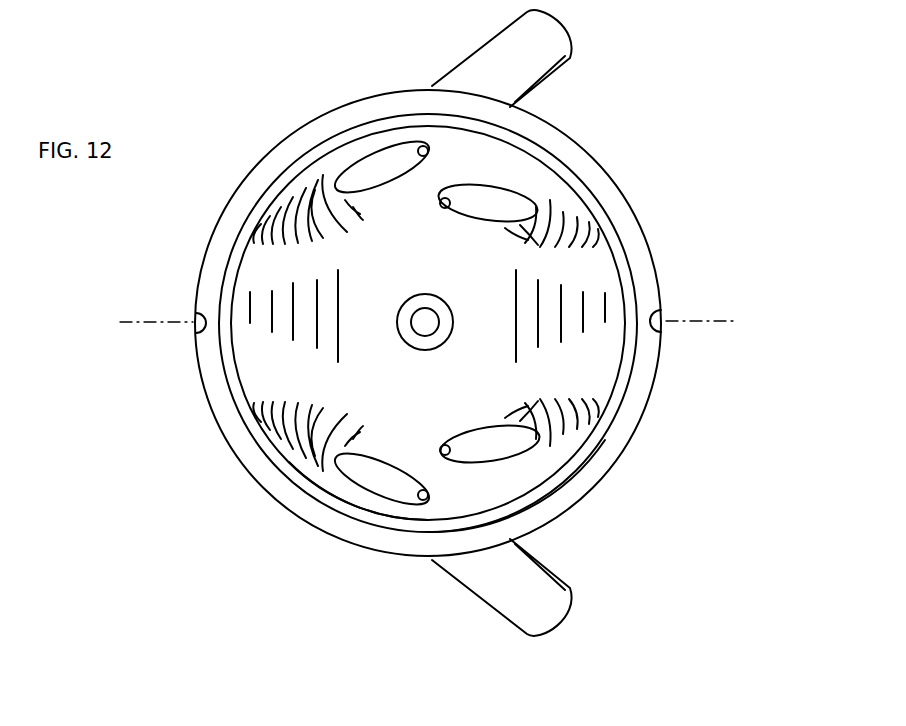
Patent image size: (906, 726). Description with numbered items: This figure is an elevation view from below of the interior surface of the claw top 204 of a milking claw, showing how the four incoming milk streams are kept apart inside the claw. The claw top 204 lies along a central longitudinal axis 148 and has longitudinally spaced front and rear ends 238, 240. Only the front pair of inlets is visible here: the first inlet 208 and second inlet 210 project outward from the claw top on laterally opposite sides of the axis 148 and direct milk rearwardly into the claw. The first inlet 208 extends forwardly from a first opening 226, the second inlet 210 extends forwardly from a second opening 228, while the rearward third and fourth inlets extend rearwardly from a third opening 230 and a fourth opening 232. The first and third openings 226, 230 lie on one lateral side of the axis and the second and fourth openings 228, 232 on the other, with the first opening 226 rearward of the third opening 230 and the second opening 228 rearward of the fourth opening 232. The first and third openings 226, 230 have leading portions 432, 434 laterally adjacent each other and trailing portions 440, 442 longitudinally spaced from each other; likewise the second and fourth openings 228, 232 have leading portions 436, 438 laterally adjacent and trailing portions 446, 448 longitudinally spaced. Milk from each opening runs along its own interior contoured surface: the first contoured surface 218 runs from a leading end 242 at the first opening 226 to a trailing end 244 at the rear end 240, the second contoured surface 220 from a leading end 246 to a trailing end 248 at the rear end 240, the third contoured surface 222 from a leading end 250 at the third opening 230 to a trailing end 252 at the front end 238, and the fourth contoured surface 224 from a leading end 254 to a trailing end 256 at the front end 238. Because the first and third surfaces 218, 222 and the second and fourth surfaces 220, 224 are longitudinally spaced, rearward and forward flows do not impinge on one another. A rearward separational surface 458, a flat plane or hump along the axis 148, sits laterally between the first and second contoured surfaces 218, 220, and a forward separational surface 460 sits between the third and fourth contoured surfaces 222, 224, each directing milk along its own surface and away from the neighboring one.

The central longitudinal axis 148 is at (708, 321).
The claw top 204 is at (197, 283).
The first inlet 208 is at (480, 598).
The second inlet 210 is at (492, 35).
The first contoured surface 218 is at (289, 462).
The second contoured surface 220 is at (297, 190).
The third contoured surface 222 is at (605, 440).
The fourth contoured surface 224 is at (580, 200).
The first opening 226 is at (382, 482).
The second opening 228 is at (380, 168).
The third opening 230 is at (475, 430).
The fourth opening 232 is at (522, 200).
The front end 238 is at (662, 295).
The rear end 240 is at (199, 345).
The leading end of first contoured surface 242 is at (352, 442).
The trailing end of first contoured surface 244 is at (240, 392).
The leading end of second contoured surface 246 is at (355, 208).
The trailing end of second contoured surface 248 is at (253, 243).
The leading end of third contoured surface 250 is at (522, 398).
The trailing end of third contoured surface 252 is at (608, 385).
The leading end of fourth contoured surface 254 is at (522, 230).
The trailing end of fourth contoured surface 256 is at (600, 252).
The leading portion of first opening 432 is at (430, 490).
The leading portion of third opening 434 is at (453, 436).
The leading portion of second opening 436 is at (430, 155).
The leading portion of fourth opening 438 is at (441, 202).
The trailing portion of first opening 440 is at (347, 492).
The trailing portion of third opening 442 is at (528, 455).
The trailing portion of second opening 446 is at (355, 178).
The trailing portion of fourth opening 448 is at (572, 170).
The rearward separational surface 458 is at (308, 312).
The forward separational surface 460 is at (550, 313).